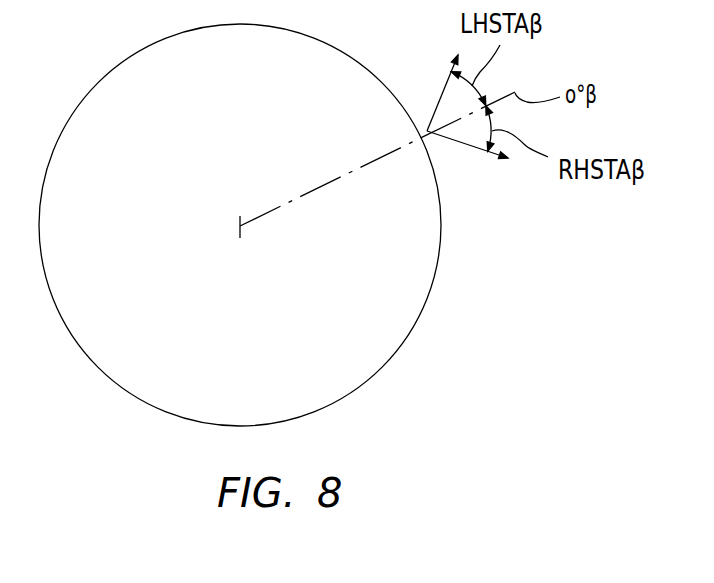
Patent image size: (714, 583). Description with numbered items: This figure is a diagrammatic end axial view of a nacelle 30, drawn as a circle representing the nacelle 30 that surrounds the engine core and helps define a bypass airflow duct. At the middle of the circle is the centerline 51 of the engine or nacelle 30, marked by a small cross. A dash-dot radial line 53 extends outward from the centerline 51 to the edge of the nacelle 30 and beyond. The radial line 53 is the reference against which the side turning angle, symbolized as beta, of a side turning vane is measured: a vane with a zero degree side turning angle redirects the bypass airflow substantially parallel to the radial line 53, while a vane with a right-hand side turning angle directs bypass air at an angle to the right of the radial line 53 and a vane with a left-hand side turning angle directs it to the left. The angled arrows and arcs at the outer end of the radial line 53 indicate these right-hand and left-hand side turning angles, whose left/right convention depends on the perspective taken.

The nacelle assembly 30 is at (433, 323).
The centerline 51 is at (238, 227).
The radial line 53 is at (293, 194).